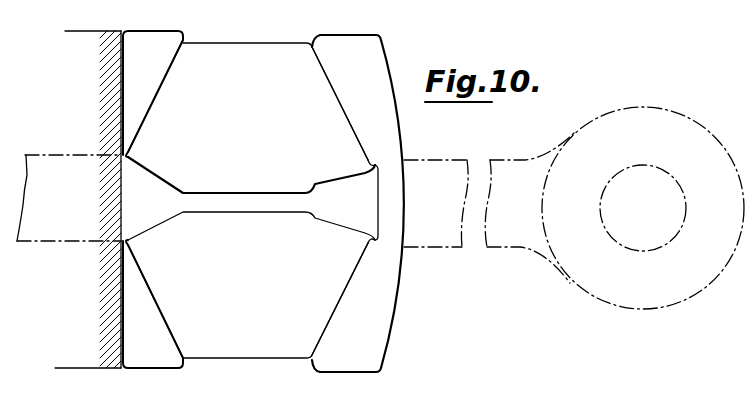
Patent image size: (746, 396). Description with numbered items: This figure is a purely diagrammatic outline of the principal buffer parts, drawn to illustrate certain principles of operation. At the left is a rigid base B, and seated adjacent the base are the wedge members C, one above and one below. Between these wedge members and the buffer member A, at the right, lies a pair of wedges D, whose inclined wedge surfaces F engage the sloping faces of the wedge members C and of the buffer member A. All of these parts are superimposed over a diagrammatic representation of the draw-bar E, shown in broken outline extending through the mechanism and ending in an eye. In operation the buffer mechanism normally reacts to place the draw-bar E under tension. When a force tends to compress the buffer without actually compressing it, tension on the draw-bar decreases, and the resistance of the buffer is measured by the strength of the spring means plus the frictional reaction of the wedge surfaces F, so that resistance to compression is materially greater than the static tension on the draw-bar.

The buffer member A is at (358, 203).
The rigid base B is at (69, 238).
The wedge member C is at (153, 199).
The wedge D is at (251, 200).
The draw-bar E is at (574, 208).
The wedge surface F is at (152, 115).